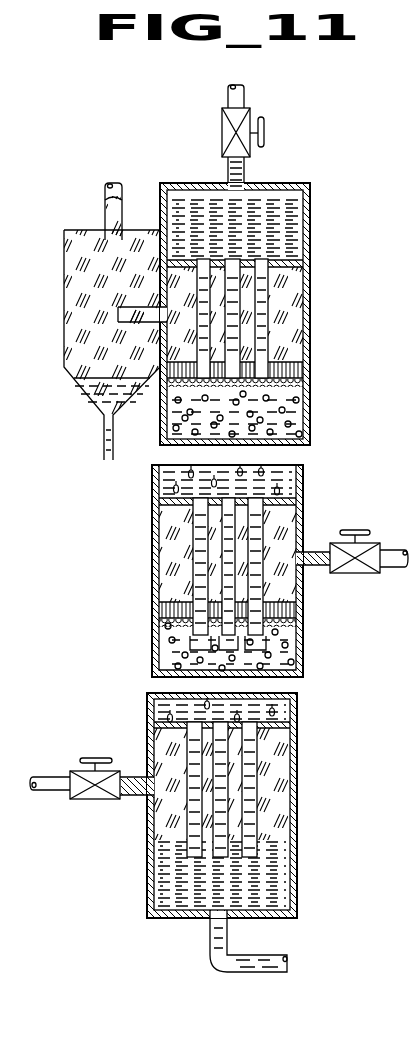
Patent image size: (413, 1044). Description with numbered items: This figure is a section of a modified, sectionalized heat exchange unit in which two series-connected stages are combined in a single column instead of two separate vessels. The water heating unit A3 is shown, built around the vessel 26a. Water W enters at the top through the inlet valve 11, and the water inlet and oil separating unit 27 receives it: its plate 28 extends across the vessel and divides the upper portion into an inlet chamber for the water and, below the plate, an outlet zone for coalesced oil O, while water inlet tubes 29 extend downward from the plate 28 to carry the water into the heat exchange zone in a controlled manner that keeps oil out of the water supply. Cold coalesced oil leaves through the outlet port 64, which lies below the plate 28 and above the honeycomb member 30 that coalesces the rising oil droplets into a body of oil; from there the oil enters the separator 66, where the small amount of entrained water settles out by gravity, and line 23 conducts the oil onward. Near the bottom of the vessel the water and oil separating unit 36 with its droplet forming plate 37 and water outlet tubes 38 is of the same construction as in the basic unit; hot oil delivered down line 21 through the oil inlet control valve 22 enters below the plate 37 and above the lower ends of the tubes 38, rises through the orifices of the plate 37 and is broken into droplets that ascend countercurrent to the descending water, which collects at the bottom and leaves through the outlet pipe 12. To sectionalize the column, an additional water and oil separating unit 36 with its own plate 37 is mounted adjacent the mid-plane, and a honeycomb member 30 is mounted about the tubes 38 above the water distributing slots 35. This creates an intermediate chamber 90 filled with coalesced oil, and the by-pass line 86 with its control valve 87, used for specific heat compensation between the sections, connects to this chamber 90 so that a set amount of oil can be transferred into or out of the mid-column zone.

The water inlet valve 11 is at (229, 130).
The water outlet pipe 12 is at (258, 962).
The oil line 21 is at (55, 777).
The oil inlet control valve 22 is at (88, 797).
The oil line 23 is at (107, 192).
The vessel 26a is at (292, 182).
The water inlet and oil separating unit 27 is at (270, 302).
The plate 28 is at (283, 262).
The water inlet tubes 29 is at (258, 345).
The honeycomb member 30 is at (286, 369).
The water outlet slots 35 is at (195, 640).
The water and oil separating unit 36 is at (190, 521).
The droplet forming plate 37 is at (175, 490).
The water outlet tubes 38 is at (225, 590).
The outlet port 64 is at (134, 306).
The separator 66 is at (64, 268).
The by-pass line 86 is at (315, 548).
The control valve 87 is at (355, 568).
The intermediate chamber 90 is at (283, 526).
The water heating unit A3 is at (313, 218).
The water W is at (203, 210).
The oil O is at (75, 318).